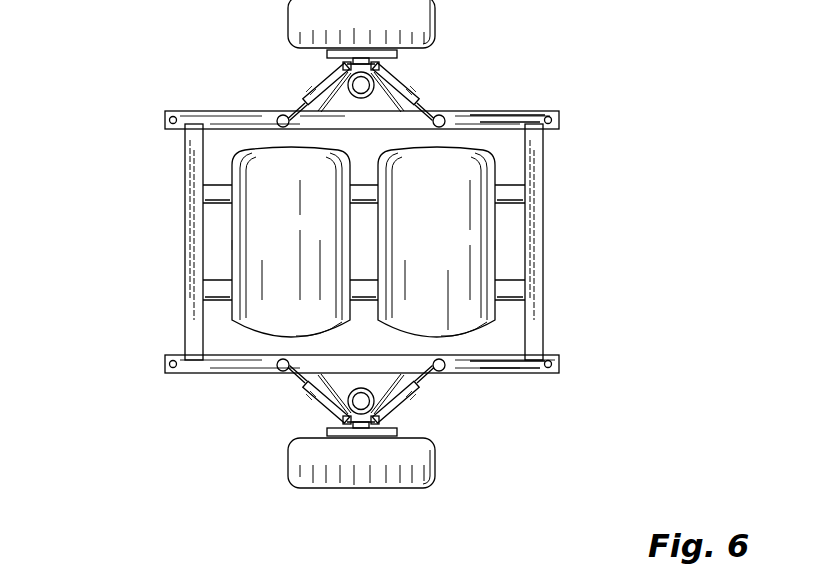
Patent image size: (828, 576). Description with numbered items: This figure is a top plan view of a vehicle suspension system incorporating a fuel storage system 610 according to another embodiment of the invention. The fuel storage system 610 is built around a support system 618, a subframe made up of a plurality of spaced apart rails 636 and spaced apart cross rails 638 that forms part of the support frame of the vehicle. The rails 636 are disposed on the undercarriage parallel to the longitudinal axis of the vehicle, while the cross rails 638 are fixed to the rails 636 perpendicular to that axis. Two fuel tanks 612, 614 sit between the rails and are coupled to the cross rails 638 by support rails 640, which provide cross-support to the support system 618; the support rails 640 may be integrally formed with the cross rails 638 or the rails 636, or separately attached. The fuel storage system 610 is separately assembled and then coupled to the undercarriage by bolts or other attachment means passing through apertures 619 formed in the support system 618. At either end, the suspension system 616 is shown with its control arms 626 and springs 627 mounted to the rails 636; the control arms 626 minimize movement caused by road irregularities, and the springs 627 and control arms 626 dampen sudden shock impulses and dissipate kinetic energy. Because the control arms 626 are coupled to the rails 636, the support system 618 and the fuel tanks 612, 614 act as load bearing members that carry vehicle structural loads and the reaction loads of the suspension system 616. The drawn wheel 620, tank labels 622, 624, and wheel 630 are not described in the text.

The fuel storage system 610 is at (125, 88).
The fuel tank 612 is at (308, 255).
The fuel tank 614 is at (458, 255).
The suspension system 616 is at (415, 83).
The support system 618 is at (543, 147).
The apertures 619 is at (165, 125).
The front wheel 620 is at (383, 27).
The first tank body 622 is at (250, 207).
The second tank body 624 is at (482, 247).
The control arms 626 is at (313, 92).
The springs 627 is at (357, 95).
The rear wheel 630 is at (330, 410).
The rails 636 is at (513, 118).
The cross rails 638 is at (187, 324).
The support rails 640 is at (217, 195).